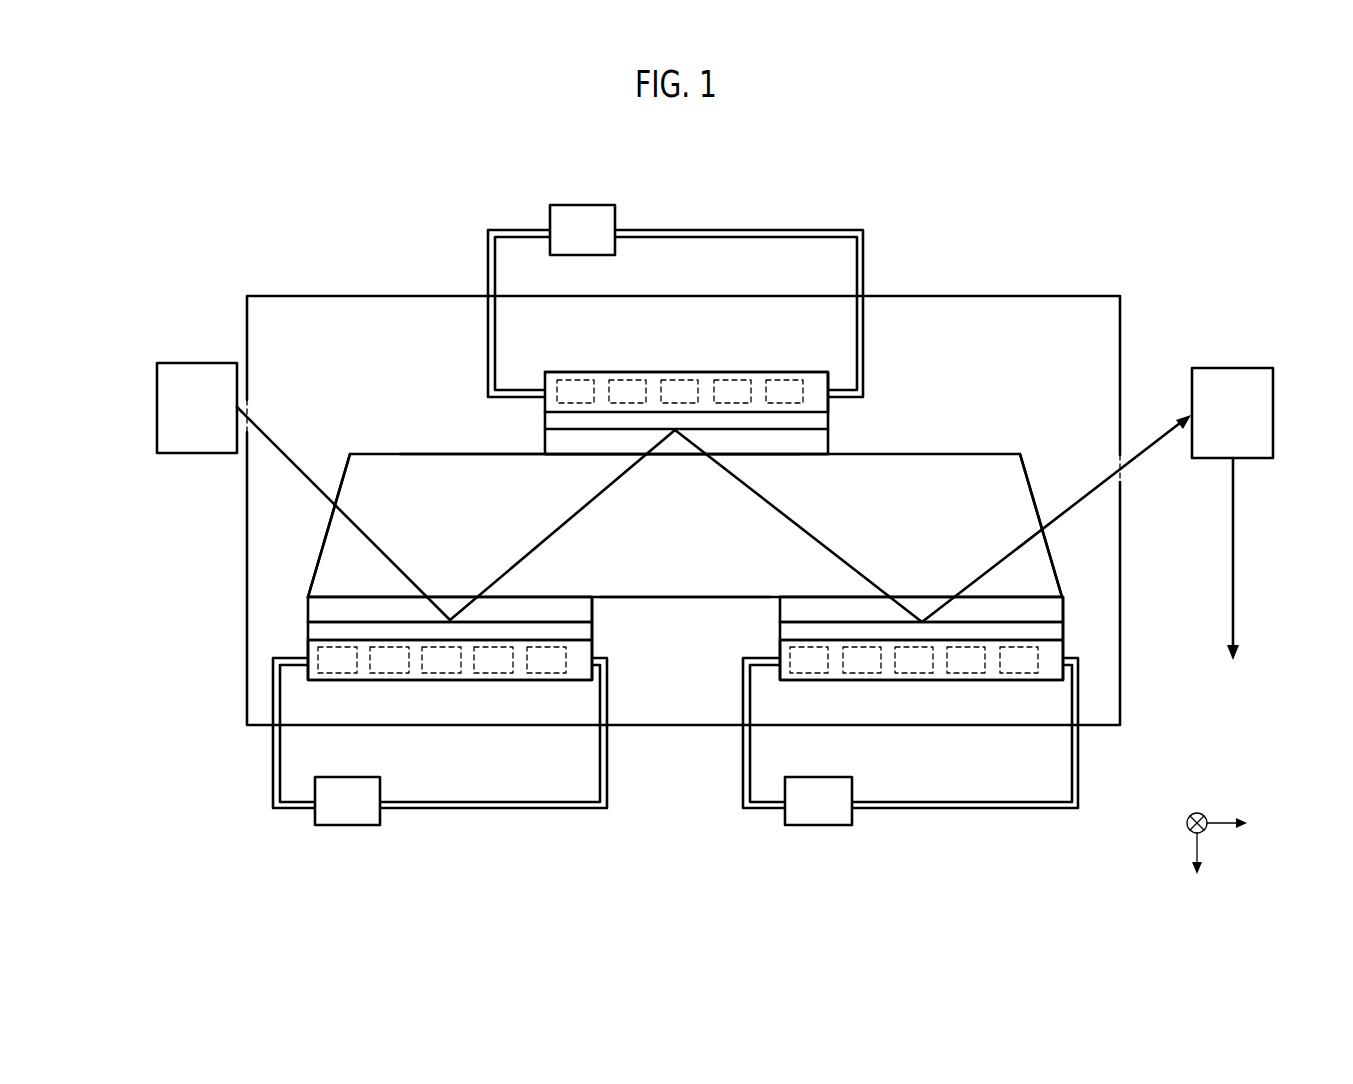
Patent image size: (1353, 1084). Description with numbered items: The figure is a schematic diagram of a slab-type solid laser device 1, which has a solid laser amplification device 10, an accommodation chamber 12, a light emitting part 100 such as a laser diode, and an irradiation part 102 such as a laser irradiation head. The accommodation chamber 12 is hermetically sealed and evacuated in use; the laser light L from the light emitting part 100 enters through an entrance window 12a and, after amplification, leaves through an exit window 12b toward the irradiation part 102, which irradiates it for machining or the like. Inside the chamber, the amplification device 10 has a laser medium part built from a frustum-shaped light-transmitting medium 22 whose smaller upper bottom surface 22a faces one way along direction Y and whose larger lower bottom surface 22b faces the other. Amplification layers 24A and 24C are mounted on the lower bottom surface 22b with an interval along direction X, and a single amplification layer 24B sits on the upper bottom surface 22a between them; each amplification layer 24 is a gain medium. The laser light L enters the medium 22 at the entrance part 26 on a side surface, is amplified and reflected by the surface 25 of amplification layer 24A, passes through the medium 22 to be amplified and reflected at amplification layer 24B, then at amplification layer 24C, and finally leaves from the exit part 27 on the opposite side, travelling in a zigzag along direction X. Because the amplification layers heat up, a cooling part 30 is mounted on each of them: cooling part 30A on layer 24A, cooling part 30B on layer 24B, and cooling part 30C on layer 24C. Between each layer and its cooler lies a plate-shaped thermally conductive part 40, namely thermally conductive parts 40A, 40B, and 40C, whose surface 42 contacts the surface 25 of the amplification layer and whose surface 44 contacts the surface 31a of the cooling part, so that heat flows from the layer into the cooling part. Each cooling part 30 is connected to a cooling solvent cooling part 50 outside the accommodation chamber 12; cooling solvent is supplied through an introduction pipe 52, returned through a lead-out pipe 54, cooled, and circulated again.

The solid laser device 1 is at (1104, 178).
The solid laser amplification device 10 is at (347, 412).
The accommodation chamber 12 is at (1073, 295).
The entrance window 12a is at (245, 430).
The exit window 12b is at (1122, 478).
The medium 22 is at (333, 562).
The upper bottom surface 22a is at (443, 455).
The lower bottom surface 22b is at (700, 599).
The amplification layer 24 is at (681, 560).
The amplification layer 24A is at (318, 610).
The amplification layer 24B is at (636, 444).
The amplification layer 24C is at (872, 610).
The surface 25 is at (656, 429).
The entrance part 26 is at (352, 500).
The exit part 27 is at (1028, 524).
The cooling part 30 is at (681, 560).
The cooling part 30A is at (292, 673).
The cooling part 30B is at (547, 390).
The cooling part 30C is at (1050, 672).
The surface 31a is at (764, 418).
The thermally conductive part 40 is at (681, 560).
The thermally conductive part 40A is at (318, 632).
The thermally conductive part 40B is at (555, 422).
The thermally conductive part 40C is at (1050, 632).
The surface 42 is at (800, 433).
The surface 44 is at (707, 412).
The cooling solvent cooling part 50 is at (582, 205).
The introduction pipe 52 is at (518, 230).
The lead-out pipe 54 is at (787, 230).
The light emitting part 100 is at (197, 363).
The irradiation part 102 is at (1232, 368).
The laser light L is at (288, 453).